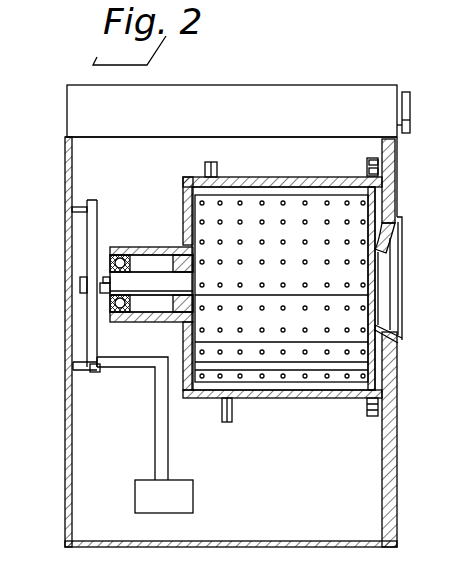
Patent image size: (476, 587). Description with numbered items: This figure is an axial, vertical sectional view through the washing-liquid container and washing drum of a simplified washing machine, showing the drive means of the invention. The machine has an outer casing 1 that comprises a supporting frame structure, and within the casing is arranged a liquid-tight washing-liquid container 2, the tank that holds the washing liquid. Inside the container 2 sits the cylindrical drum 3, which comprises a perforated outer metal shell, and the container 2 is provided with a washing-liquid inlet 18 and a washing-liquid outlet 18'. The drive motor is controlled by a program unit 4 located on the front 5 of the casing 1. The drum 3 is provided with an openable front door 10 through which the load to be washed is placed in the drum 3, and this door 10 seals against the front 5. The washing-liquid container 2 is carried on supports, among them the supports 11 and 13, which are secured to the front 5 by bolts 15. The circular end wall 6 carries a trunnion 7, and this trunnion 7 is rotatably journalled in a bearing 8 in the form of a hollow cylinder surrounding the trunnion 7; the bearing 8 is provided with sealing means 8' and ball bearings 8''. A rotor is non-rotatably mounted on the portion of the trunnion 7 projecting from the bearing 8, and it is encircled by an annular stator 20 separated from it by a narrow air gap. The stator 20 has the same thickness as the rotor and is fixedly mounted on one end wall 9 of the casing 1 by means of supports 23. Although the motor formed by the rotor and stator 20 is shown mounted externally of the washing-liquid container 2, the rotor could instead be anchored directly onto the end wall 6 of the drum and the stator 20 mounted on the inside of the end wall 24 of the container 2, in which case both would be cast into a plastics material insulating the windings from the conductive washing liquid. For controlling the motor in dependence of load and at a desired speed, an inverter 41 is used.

The outer casing 1 is at (68, 250).
The washing-liquid container 2 is at (324, 396).
The cylindrical drum 3 is at (300, 327).
The program unit 4 is at (412, 126).
The front 5 is at (396, 196).
The circular end wall 6 is at (183, 200).
The trunnion 7 is at (148, 272).
The bearing 8 is at (151, 332).
The sealing means 8' is at (151, 241).
The ball bearings 8'' is at (150, 322).
The end wall 9 is at (67, 174).
The front door 10 is at (402, 276).
The support 11 is at (378, 165).
The support 13 is at (386, 410).
The bolts 15 is at (368, 169).
The washing-liquid inlet 18 is at (194, 163).
The washing-liquid outlet 18' is at (251, 415).
The stator 20 is at (96, 372).
The supports 23 is at (77, 207).
The end wall 24 is at (185, 378).
The inverter 41 is at (190, 492).